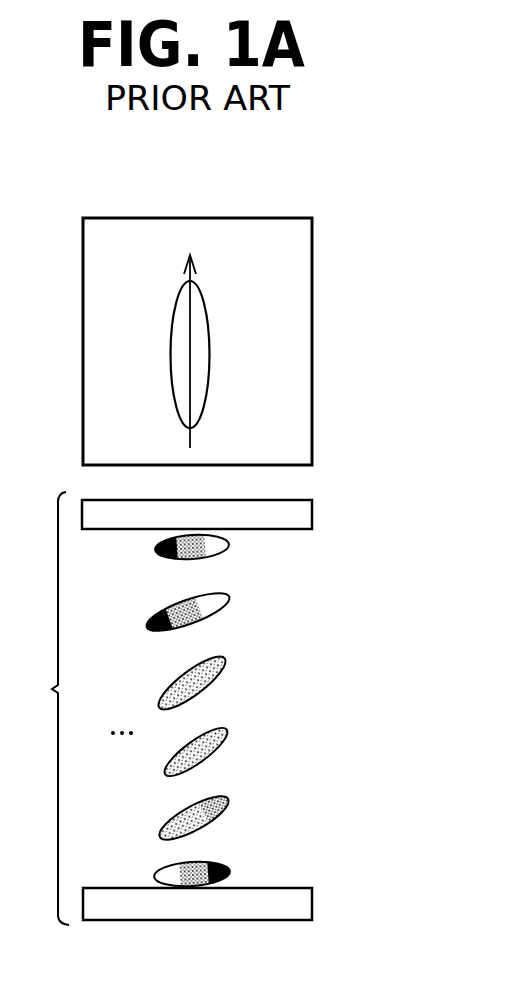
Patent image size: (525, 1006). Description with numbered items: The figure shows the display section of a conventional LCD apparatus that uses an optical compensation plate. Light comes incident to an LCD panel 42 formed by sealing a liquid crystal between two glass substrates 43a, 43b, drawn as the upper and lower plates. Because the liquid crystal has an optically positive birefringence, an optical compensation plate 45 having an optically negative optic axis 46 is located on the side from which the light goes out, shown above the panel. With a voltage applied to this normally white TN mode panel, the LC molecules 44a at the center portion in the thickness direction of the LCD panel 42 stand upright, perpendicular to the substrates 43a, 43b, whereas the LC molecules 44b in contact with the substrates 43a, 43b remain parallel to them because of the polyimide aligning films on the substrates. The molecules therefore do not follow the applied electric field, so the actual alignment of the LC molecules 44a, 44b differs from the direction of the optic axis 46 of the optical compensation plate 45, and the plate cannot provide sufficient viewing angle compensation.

The LCD panel 42 is at (197, 730).
The glass substrate 43a is at (233, 910).
The glass substrate 43b is at (297, 515).
The LC molecules 44a is at (213, 602).
The LC molecules 44b is at (220, 548).
The optical compensation plate 45 is at (312, 322).
The optic axis 46 is at (190, 390).